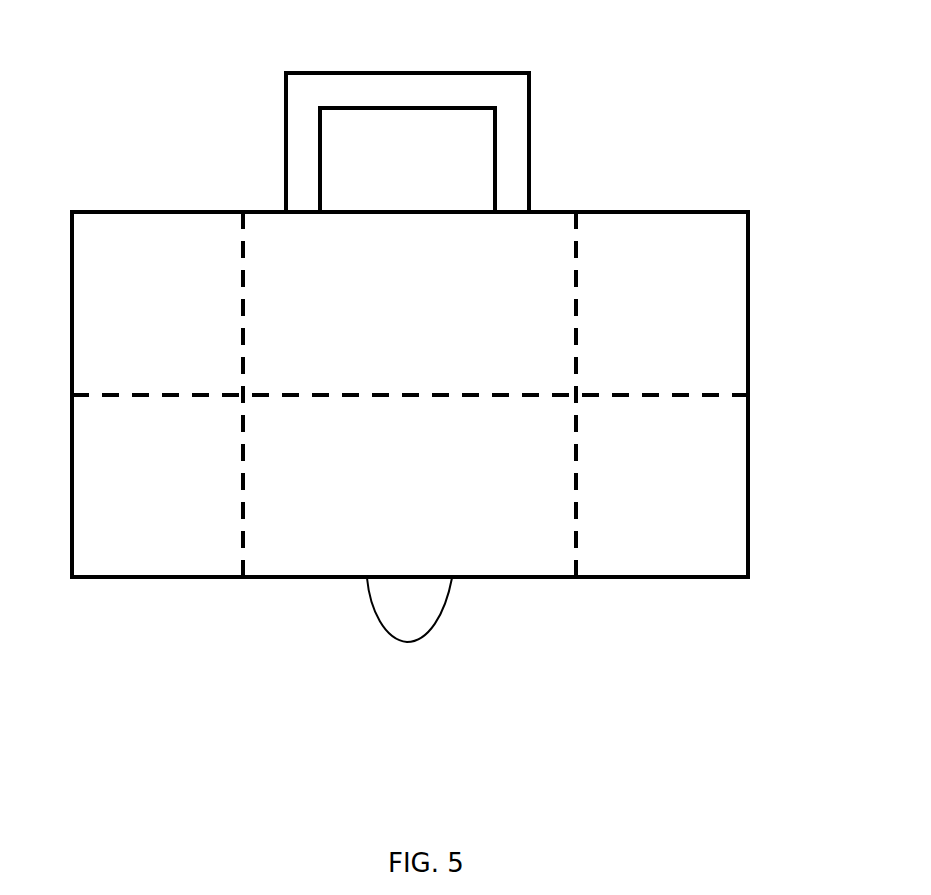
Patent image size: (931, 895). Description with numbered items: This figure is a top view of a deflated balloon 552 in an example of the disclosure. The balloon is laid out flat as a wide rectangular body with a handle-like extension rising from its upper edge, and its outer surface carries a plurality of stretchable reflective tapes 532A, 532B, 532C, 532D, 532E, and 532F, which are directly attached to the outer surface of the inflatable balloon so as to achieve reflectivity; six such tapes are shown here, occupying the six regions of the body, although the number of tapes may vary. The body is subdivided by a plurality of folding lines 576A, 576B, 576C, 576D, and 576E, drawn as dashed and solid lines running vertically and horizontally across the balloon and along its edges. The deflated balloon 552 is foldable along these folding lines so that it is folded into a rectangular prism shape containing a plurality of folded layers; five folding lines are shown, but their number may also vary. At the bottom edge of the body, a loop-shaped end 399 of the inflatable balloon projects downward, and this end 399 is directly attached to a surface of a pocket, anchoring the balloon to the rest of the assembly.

The deflated balloon 552 is at (122, 75).
The folding line 576A is at (222, 240).
The folding line 576B is at (586, 239).
The folding line 576C is at (728, 405).
The folding line 576D is at (106, 199).
The folding line 576E is at (721, 589).
The stretchable reflective tape 532A is at (196, 323).
The stretchable reflective tape 532B is at (430, 328).
The stretchable reflective tape 532C is at (694, 321).
The stretchable reflective tape 532D is at (200, 499).
The stretchable reflective tape 532E is at (432, 504).
The stretchable reflective tape 532F is at (698, 499).
The end of the inflatable balloon 399 is at (420, 623).